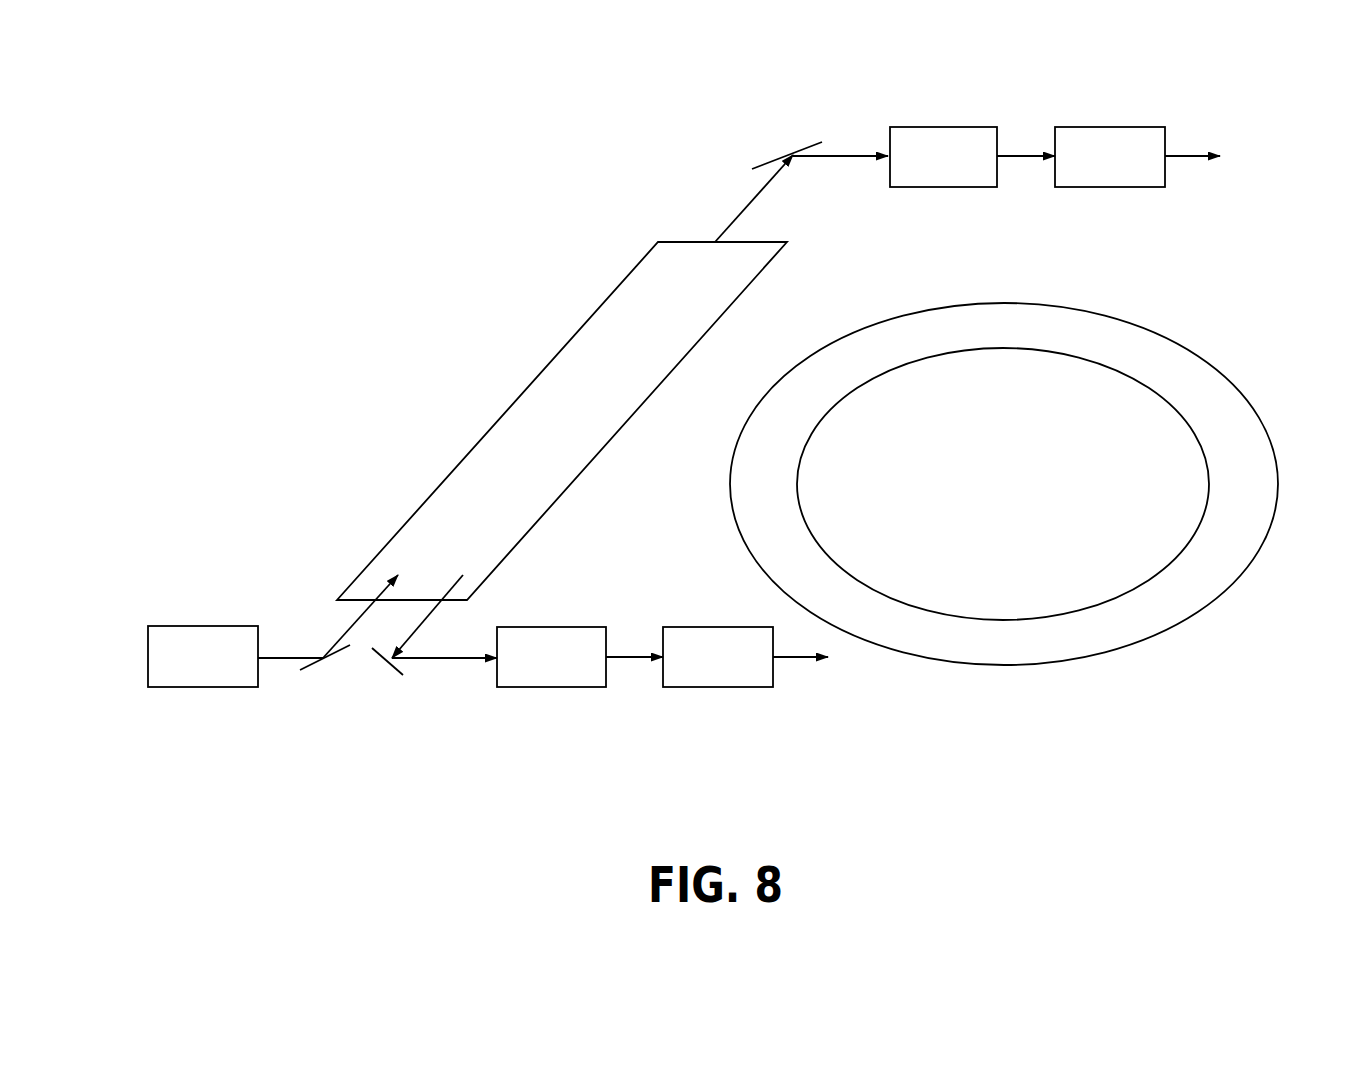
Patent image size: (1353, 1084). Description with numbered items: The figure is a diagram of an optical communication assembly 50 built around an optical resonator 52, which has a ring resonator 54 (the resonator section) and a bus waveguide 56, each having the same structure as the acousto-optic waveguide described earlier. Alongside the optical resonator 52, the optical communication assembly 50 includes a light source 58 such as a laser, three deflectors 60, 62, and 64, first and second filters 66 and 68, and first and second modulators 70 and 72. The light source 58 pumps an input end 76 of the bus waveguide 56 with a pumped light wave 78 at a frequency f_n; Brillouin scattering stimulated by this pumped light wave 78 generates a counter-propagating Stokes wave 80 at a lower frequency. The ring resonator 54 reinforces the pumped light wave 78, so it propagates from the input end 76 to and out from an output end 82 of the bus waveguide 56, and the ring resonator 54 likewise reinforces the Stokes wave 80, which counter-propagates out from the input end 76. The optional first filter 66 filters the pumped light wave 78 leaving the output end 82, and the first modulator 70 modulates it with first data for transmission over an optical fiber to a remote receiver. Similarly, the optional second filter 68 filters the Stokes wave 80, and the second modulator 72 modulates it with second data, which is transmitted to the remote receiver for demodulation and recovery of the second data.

The optical communication assembly 50 is at (307, 260).
The optical resonator 52 is at (465, 327).
The ring resonator 54 is at (1040, 302).
The bus waveguide 56 is at (748, 285).
The light source 58 is at (178, 626).
The deflector 60 is at (766, 166).
The deflector 62 is at (320, 663).
The deflector 64 is at (375, 653).
The first filter 66 is at (918, 127).
The second filter 68 is at (527, 627).
The first modulator 70 is at (1085, 127).
The second modulator 72 is at (692, 627).
The input end 76 is at (338, 616).
The pumped light wave 78 is at (348, 647).
The Stokes wave 80 is at (437, 609).
The output end 82 is at (682, 238).